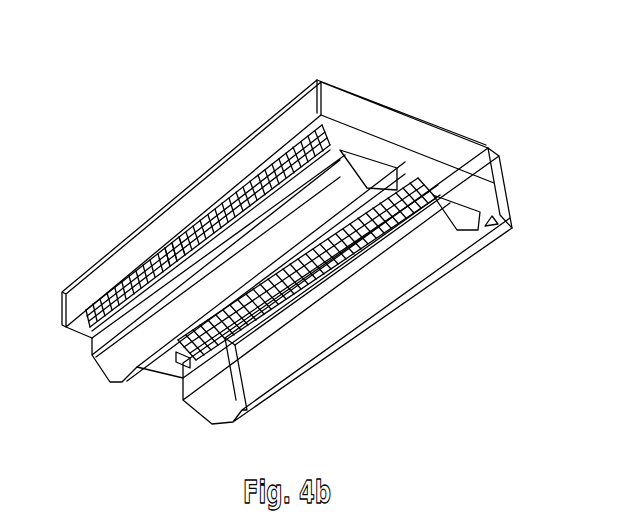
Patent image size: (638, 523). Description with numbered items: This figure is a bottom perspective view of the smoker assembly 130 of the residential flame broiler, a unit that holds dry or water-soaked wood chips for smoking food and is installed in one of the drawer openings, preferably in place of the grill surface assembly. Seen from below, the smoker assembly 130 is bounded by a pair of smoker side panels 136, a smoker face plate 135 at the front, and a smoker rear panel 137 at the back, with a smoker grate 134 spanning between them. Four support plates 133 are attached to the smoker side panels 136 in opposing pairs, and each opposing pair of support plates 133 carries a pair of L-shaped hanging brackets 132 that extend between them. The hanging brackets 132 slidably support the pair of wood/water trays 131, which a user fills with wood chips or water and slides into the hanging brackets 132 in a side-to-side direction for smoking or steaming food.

The smoker assembly 130 is at (544, 82).
The wood/water tray 131 is at (115, 362).
The hanging bracket 132 is at (300, 146).
The support plate 133 is at (322, 116).
The smoker grate 134 is at (173, 242).
The smoker face plate 135 is at (499, 173).
The smoker side panel 136 is at (407, 148).
The smoker rear panel 137 is at (121, 250).